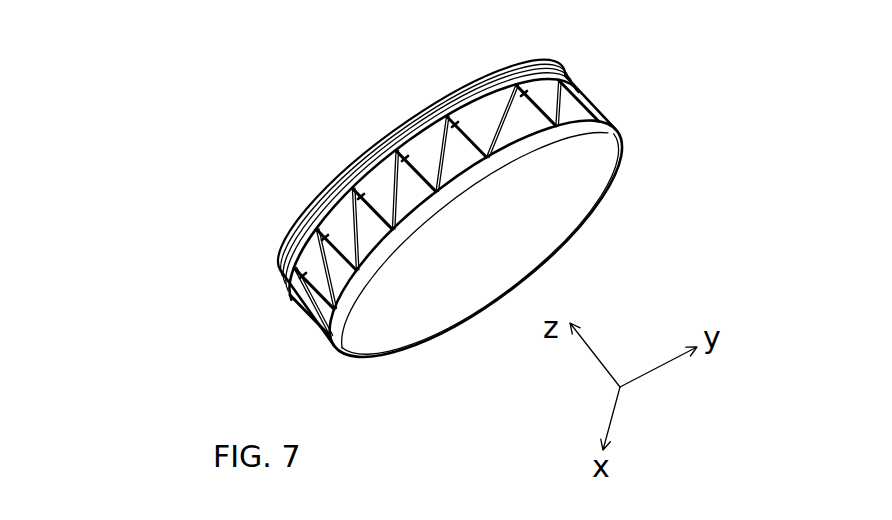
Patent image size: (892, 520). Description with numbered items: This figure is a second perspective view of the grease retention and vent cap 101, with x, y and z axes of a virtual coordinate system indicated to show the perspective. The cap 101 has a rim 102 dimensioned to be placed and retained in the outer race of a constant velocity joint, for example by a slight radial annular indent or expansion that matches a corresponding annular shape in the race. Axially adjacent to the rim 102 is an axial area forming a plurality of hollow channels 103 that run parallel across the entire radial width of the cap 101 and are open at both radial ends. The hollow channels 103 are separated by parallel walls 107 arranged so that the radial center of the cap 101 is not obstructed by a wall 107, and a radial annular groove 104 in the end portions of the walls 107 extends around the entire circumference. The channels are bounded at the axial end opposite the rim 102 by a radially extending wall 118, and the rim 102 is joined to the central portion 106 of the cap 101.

The grease retention and vent cap 101 is at (293, 114).
The rim 102 is at (560, 67).
The hollow channels 103 is at (480, 118).
The radial annular groove 104 is at (582, 100).
The central portion 106 is at (537, 218).
The parallel walls 107 is at (433, 197).
The radially extending wall 118 is at (480, 275).